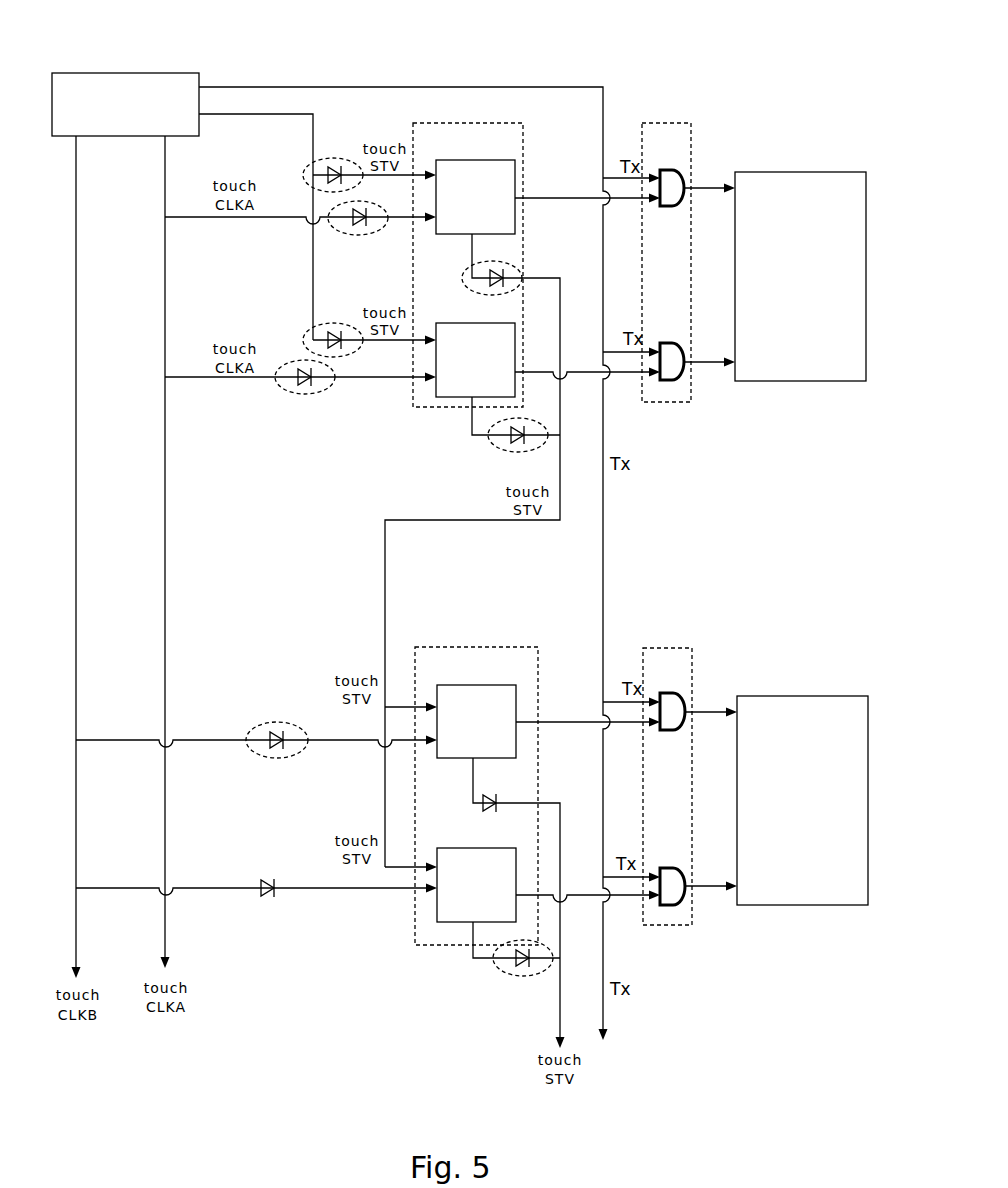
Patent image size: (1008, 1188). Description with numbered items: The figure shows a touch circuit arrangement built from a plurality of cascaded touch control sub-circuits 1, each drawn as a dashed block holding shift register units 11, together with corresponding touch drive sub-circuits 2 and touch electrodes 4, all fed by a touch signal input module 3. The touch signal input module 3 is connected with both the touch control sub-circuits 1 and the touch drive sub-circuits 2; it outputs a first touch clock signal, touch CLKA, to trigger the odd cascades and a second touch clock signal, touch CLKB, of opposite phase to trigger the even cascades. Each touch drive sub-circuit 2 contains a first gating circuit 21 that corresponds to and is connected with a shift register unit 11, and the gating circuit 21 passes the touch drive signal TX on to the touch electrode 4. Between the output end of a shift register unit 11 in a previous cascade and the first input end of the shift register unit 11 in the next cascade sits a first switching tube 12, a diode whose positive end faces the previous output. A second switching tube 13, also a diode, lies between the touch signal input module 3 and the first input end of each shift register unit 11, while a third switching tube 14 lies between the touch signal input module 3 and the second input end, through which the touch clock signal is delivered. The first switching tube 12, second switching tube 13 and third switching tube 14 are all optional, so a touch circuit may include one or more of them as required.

The touch control sub-circuit 1 is at (440, 123).
The shift register unit 11 is at (480, 160).
The first switching tube 12 is at (500, 262).
The second switching tube 13 is at (322, 160).
The third switching tube 14 is at (355, 236).
The touch drive sub-circuit 2 is at (680, 123).
The first gating circuit 21 is at (672, 170).
The touch signal input module 3 is at (128, 73).
The touch electrode 4 is at (790, 172).